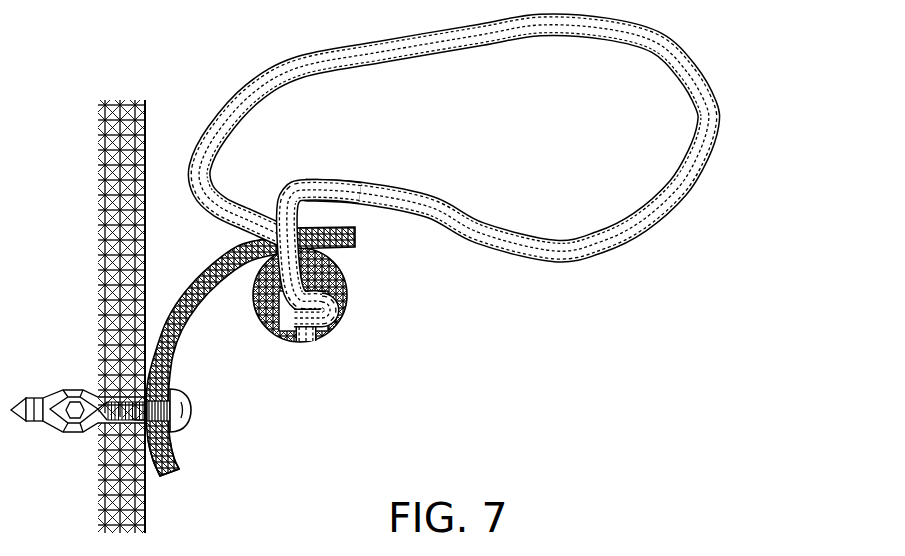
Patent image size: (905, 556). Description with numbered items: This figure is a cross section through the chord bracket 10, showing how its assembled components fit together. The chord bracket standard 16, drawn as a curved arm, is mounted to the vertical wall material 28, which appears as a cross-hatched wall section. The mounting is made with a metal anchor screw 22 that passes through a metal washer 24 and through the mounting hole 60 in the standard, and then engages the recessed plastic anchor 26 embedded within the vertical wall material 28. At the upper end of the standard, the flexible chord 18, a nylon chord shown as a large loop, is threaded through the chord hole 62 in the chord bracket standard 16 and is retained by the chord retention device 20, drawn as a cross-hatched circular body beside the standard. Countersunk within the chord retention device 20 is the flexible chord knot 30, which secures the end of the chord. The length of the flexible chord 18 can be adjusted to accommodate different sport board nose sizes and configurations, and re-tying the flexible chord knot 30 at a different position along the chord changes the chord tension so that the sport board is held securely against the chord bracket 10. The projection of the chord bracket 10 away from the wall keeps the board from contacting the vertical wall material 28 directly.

The chord bracket 10 is at (338, 370).
The chord bracket standard 16 is at (190, 318).
The flexible chord 18 is at (350, 57).
The chord retention device 20 is at (347, 299).
The metal anchor screw 22 is at (189, 410).
The metal washer 24 is at (170, 436).
The recessed plastic anchor 26 is at (74, 392).
The vertical wall material 28 is at (147, 118).
The flexible chord knot 30 is at (305, 338).
The mounting hole 60 is at (178, 471).
The chord hole 62 is at (303, 248).